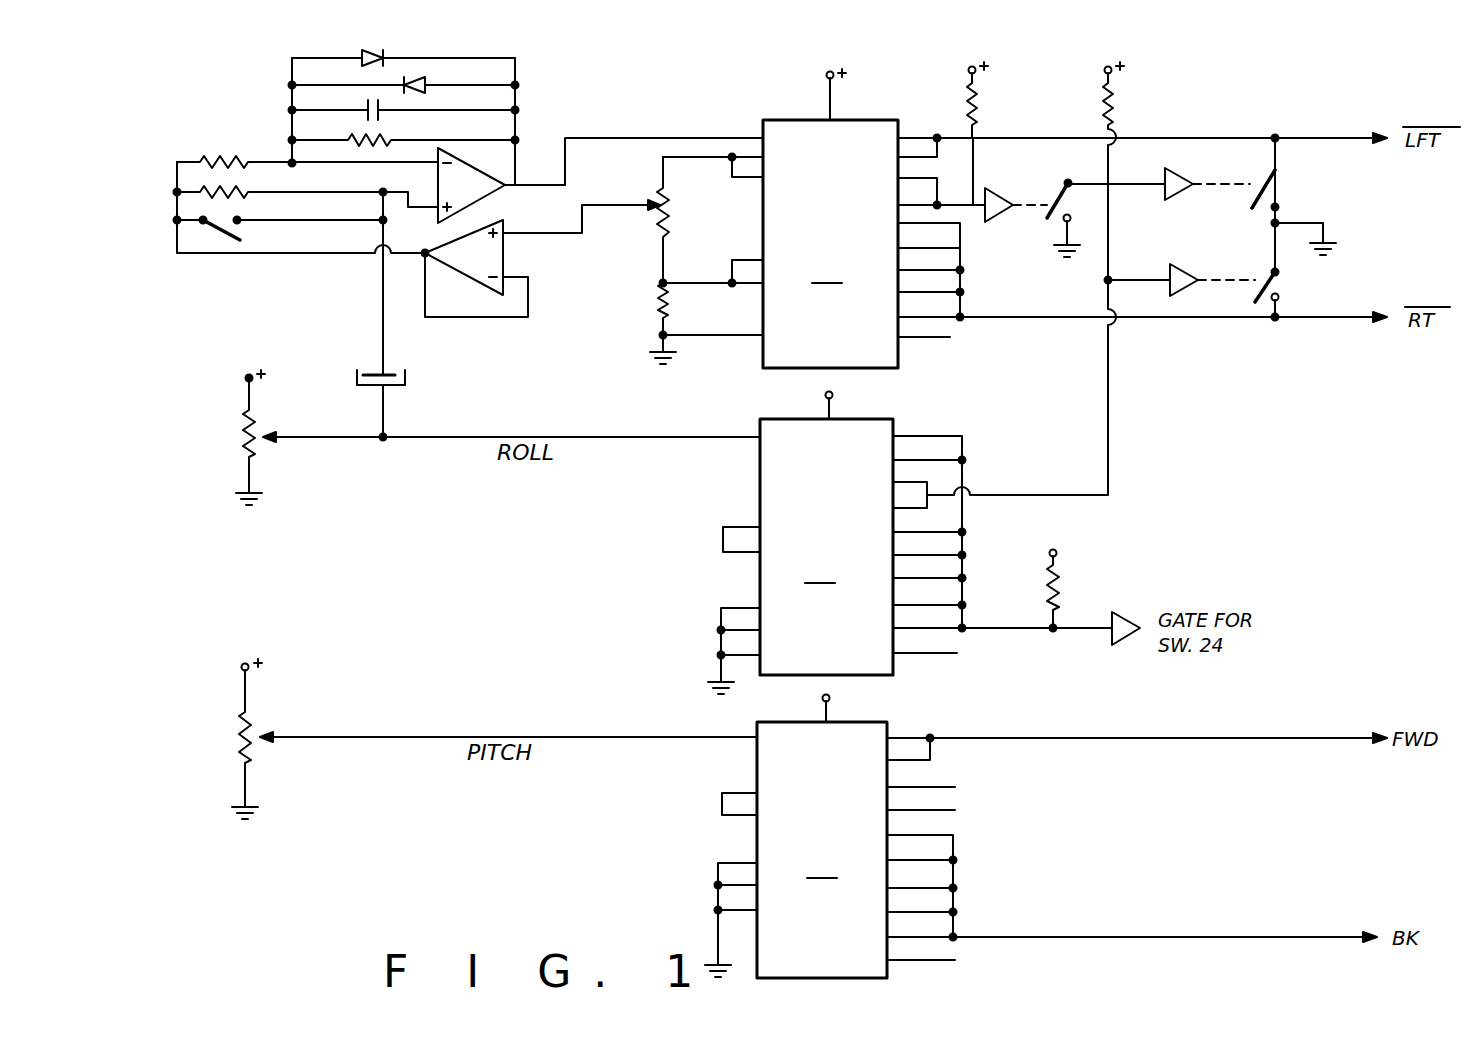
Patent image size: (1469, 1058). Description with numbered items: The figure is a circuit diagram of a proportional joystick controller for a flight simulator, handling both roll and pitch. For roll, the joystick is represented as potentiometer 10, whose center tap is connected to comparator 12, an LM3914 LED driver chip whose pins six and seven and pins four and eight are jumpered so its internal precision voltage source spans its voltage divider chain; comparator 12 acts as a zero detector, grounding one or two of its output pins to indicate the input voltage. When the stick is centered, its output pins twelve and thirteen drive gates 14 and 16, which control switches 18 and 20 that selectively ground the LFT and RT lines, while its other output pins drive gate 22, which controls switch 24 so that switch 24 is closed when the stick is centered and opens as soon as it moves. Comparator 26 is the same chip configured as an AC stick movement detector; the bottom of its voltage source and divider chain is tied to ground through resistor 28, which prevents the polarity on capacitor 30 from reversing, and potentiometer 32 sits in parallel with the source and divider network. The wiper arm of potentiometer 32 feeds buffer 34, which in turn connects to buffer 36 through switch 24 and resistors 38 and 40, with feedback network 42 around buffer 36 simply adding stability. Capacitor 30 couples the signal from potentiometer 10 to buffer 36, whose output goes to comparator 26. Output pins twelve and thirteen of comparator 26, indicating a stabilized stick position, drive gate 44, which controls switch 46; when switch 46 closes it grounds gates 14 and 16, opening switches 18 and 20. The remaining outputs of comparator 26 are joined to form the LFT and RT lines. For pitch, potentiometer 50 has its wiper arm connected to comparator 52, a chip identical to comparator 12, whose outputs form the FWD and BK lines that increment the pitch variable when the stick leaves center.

The potentiometer 10 is at (240, 427).
The comparator 12 is at (910, 543).
The gate 14 is at (1180, 178).
The gate 16 is at (1187, 276).
The switch 18 is at (1286, 193).
The switch 20 is at (1287, 284).
The gate 22 is at (1130, 620).
The switch 24 is at (212, 214).
The comparator 26 is at (863, 218).
The resistor 28 is at (657, 318).
The capacitor 30 is at (357, 384).
The potentiometer 32 is at (658, 226).
The buffer 34 is at (505, 256).
The buffer 36 is at (503, 188).
The resistor 38 is at (226, 155).
The resistor 40 is at (210, 180).
The feedback network 42 is at (535, 99).
The gate 44 is at (1005, 222).
The switch 46 is at (1052, 190).
The potentiometer 50 is at (240, 728).
The comparator 52 is at (1040, 837).